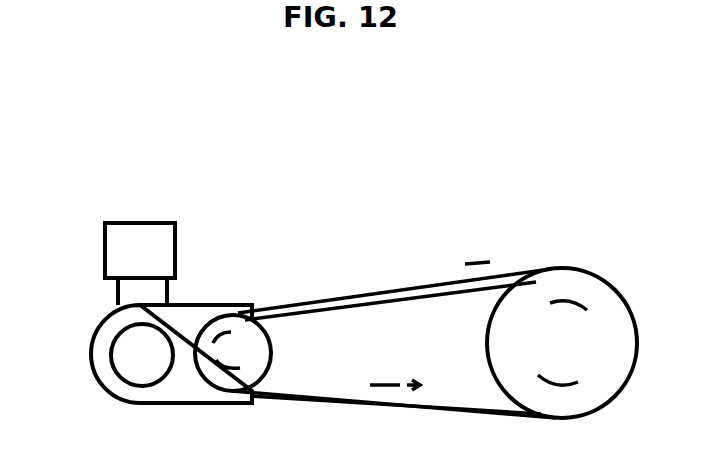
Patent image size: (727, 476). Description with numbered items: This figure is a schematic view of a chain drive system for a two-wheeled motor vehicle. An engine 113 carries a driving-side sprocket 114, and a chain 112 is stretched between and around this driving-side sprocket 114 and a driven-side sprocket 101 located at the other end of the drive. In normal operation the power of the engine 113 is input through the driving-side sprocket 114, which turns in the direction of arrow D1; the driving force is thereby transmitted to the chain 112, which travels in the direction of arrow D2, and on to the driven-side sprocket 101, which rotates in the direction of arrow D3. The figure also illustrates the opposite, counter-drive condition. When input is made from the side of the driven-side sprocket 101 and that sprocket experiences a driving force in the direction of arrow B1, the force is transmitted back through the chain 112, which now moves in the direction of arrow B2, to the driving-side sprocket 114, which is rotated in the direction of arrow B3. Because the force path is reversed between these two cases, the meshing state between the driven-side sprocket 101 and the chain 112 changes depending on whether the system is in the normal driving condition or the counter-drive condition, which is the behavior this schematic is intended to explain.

The driven-side sprocket 101 is at (597, 272).
The belt 112 is at (399, 293).
The engine 113 is at (97, 330).
The driving-side sprocket 114 is at (220, 392).
The direction of rotation of driving-side sprocket D1 is at (235, 340).
The direction of chain travel D2 is at (486, 251).
The direction of rotation of driven-side sprocket D3 is at (555, 318).
The direction of counter driving force on driven-side sprocket B1 is at (576, 376).
The direction of chain travel under counter drive B2 is at (412, 391).
The direction of rotation of driving-side sprocket under counter drive B3 is at (240, 372).